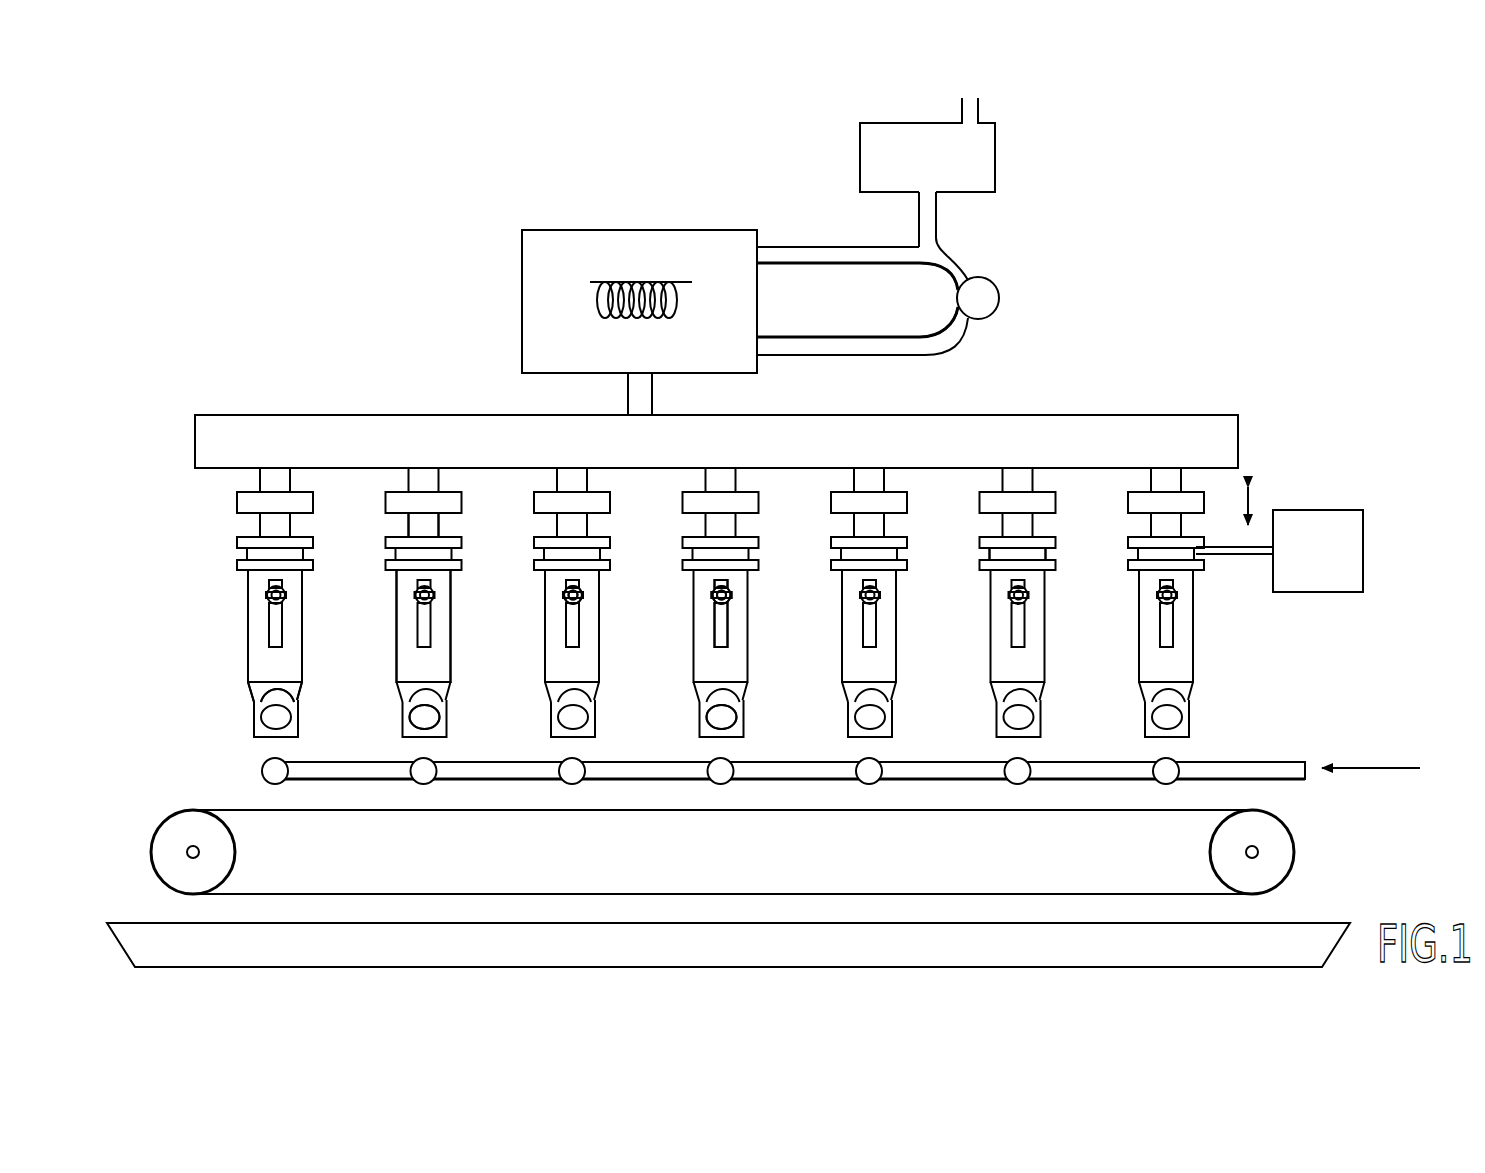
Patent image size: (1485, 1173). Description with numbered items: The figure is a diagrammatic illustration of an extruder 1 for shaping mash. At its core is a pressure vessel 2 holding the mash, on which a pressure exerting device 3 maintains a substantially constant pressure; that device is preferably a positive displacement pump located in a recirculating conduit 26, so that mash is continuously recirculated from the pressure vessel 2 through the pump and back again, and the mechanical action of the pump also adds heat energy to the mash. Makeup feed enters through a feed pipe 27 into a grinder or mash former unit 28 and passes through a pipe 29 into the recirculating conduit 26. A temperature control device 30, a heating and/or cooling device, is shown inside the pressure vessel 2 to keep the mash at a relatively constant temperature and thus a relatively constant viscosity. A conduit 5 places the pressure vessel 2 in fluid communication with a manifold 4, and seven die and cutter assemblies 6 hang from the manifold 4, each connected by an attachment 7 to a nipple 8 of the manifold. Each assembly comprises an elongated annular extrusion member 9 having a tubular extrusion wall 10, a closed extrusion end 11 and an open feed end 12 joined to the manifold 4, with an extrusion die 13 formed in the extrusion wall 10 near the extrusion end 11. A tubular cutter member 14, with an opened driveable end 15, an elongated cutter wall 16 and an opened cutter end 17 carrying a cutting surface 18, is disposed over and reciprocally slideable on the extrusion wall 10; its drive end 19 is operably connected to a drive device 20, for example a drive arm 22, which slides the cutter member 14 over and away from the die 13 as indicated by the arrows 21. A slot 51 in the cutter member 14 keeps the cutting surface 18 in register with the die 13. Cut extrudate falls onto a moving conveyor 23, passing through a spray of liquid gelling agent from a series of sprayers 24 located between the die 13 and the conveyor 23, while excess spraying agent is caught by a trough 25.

The extruder 1 is at (290, 385).
The pressure vessel 2 is at (612, 230).
The pressure exerting device 3 is at (1000, 298).
The manifold 4 is at (1200, 418).
The conduit 5 is at (628, 391).
The die and cutter assembly 6 is at (226, 628).
The attachment 7 is at (236, 510).
The nipple 8 is at (264, 482).
The elongated annular extrusion member 9 is at (440, 522).
The tubular extrusion wall 10 is at (442, 718).
The closed extrusion end 11 is at (258, 740).
The open feed end 12 is at (600, 501).
The extrusion die 13 is at (712, 716).
The tubular cutter member 14 is at (1053, 634).
The opened driveable end 15 is at (846, 541).
The elongated cutter wall 16 is at (452, 607).
The opened cutter end 17 is at (304, 690).
The cutting surface 18 is at (252, 710).
The drive end 19 is at (1046, 552).
The drive device 20 is at (1364, 546).
The arrows 21 is at (1266, 500).
The drive arm 22 is at (1216, 560).
The moving conveyor 23 is at (1296, 824).
The sprayers 24 is at (574, 786).
The trough 25 is at (1310, 922).
The recirculating conduit 26 is at (975, 260).
The feed pipe 27 is at (980, 102).
The grinder or mash former unit 28 is at (995, 157).
The pipe 29 is at (917, 228).
The temperature control device 30 is at (606, 318).
The slot 51 is at (578, 620).